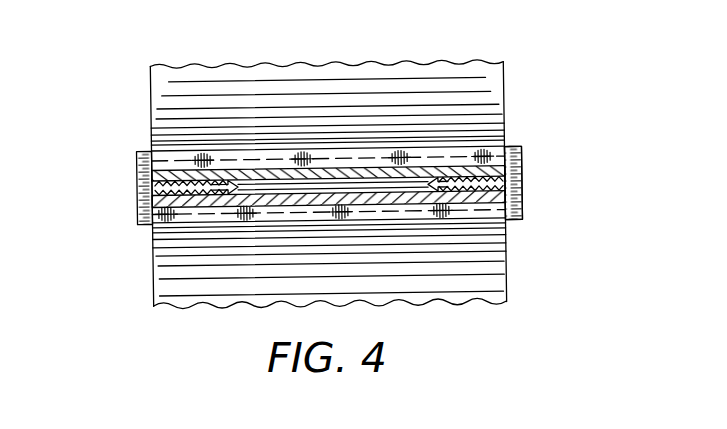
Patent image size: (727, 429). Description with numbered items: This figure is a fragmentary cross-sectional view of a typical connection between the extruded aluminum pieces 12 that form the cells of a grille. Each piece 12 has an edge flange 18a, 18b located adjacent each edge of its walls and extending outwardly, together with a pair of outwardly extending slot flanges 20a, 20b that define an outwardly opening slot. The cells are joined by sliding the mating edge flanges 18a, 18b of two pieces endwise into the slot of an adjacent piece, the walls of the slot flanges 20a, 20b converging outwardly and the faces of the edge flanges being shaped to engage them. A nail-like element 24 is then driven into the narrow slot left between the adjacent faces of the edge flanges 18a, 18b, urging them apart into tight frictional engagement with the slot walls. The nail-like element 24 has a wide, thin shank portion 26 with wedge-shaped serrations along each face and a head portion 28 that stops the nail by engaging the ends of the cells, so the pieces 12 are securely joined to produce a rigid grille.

The piece 12 is at (150, 76).
The edge flange 18a is at (240, 203).
The edge flange 18b is at (333, 174).
The slot flange 20a is at (477, 214).
The slot flange 20b is at (412, 157).
The nail-like element 24 is at (176, 184).
The shank portion 26 is at (478, 182).
The head portion 28 is at (520, 205).